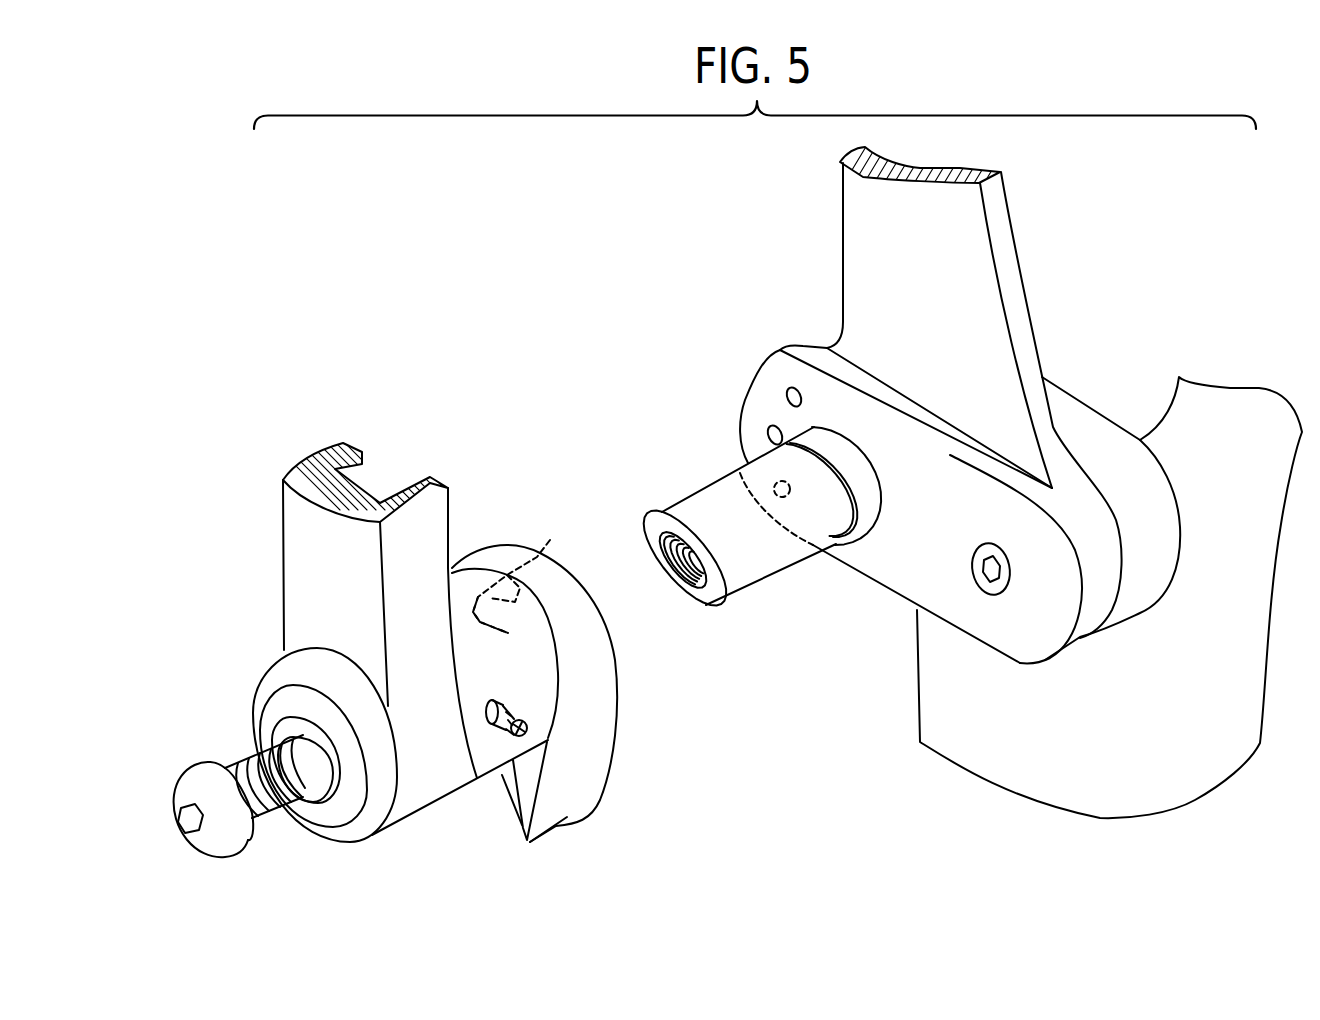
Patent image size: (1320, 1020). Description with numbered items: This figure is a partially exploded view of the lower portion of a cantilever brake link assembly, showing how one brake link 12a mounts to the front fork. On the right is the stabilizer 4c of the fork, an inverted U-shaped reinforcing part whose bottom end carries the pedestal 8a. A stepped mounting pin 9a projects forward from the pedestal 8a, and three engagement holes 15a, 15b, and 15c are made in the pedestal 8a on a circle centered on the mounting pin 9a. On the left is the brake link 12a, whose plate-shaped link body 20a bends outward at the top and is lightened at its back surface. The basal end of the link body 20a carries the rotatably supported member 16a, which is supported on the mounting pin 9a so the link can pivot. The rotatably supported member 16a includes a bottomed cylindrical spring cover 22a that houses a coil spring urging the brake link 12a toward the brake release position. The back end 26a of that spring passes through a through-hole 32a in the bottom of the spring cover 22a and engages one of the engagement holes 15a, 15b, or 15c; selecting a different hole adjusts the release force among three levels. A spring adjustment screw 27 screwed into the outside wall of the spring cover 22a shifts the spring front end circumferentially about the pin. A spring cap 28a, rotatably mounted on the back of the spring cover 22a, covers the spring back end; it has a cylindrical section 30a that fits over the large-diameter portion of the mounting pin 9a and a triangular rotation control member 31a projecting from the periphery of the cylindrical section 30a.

The stabilizer 4c is at (1017, 281).
The pedestal 8a is at (973, 479).
The mounting pin 9a is at (766, 563).
The brake link 12a is at (427, 656).
The engagement hole 15a is at (787, 394).
The engagement hole 15b is at (768, 435).
The engagement hole 15c is at (774, 490).
The rotatably supported member 16a is at (437, 802).
The link body 20a is at (298, 573).
The spring cover 22a is at (498, 748).
The back end of the coil spring 26a is at (522, 571).
The spring adjustment screw 27 is at (514, 727).
The spring cap 28a is at (566, 681).
The cylindrical section 30a is at (584, 621).
The rotation control member 31a is at (567, 806).
The through-hole 32a is at (501, 633).